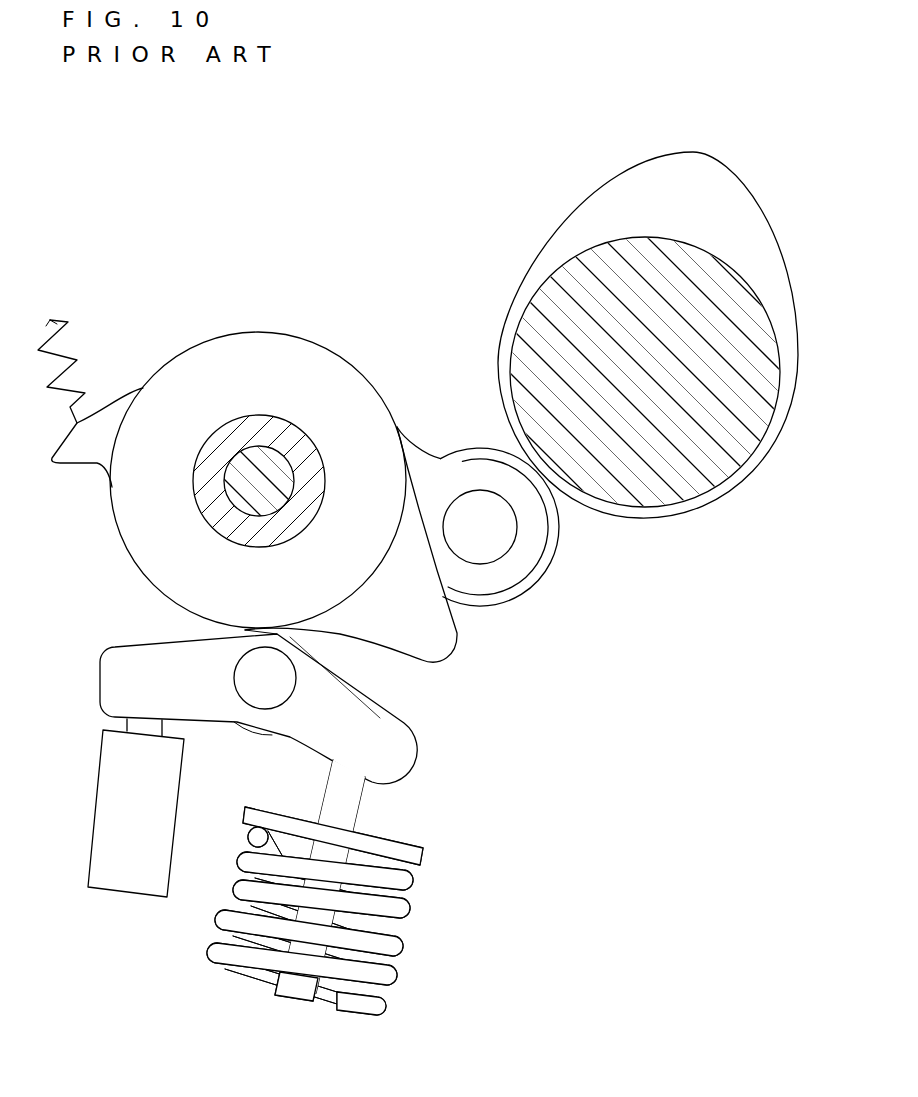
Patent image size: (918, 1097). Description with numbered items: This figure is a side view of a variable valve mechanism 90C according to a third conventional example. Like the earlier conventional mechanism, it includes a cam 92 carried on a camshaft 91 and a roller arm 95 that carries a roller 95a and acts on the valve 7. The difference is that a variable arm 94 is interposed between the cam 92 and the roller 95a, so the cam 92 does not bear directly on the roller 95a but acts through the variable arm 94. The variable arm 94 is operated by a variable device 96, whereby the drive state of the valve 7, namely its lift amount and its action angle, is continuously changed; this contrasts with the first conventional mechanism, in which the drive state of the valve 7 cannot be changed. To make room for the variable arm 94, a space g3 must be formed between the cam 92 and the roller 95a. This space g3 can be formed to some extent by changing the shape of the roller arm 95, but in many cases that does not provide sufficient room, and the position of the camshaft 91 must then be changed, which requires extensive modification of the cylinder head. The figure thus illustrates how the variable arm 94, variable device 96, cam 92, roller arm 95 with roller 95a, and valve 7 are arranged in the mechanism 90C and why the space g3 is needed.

The variable valve mechanism 90C is at (190, 192).
The cam 92 is at (637, 187).
The camshaft 91 is at (552, 300).
The variable arm 94 is at (283, 358).
The variable device 96 is at (230, 470).
The roller arm 95 is at (390, 762).
The roller 95a is at (247, 632).
The valve 7 is at (343, 805).
The space g3 is at (388, 748).